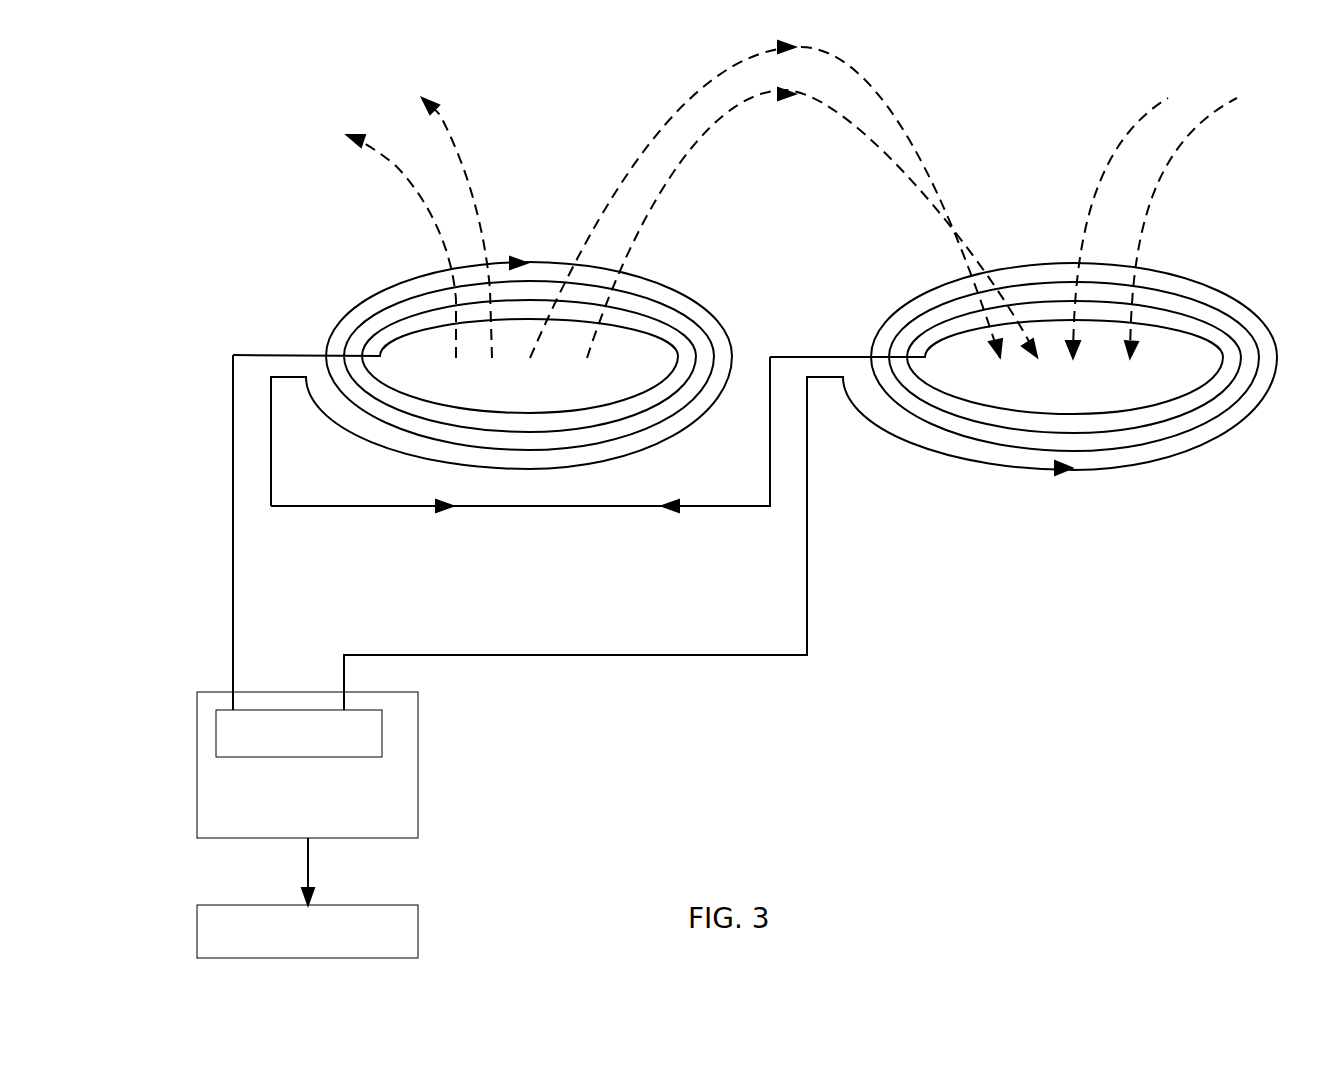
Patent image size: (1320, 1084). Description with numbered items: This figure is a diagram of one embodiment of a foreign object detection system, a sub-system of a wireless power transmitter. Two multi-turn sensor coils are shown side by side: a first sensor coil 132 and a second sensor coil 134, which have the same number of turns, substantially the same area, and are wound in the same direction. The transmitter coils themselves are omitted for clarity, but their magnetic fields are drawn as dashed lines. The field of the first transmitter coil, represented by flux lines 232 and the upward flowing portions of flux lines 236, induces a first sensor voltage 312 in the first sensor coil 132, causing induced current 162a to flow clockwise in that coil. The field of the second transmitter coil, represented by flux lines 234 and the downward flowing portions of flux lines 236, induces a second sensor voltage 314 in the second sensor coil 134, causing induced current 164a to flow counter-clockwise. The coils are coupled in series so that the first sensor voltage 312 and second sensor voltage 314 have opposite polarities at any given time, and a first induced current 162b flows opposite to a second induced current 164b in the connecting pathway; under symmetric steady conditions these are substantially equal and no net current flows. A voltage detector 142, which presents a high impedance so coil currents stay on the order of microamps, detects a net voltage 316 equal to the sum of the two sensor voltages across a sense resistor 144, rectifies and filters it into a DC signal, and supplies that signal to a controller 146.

The first sensor coil 132 is at (358, 302).
The second sensor coil 134 is at (1173, 453).
The voltage detector 142 is at (418, 800).
The sense resistor 144 is at (383, 728).
The controller 146 is at (197, 932).
The induced current 162a is at (517, 260).
The first induced current 162b is at (452, 510).
The induced current 164a is at (1060, 471).
The second induced current 164b is at (676, 510).
The flux lines 232 is at (493, 118).
The flux lines 234 is at (1127, 130).
The flux lines 236 is at (880, 110).
The first sensor voltage 312 is at (262, 534).
The second sensor voltage 314 is at (771, 532).
The net voltage 316 is at (318, 645).